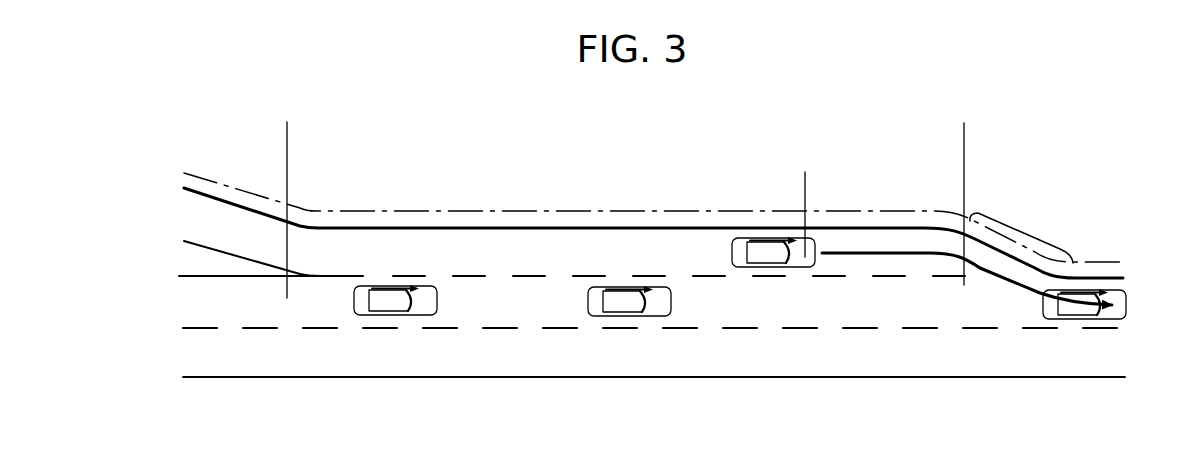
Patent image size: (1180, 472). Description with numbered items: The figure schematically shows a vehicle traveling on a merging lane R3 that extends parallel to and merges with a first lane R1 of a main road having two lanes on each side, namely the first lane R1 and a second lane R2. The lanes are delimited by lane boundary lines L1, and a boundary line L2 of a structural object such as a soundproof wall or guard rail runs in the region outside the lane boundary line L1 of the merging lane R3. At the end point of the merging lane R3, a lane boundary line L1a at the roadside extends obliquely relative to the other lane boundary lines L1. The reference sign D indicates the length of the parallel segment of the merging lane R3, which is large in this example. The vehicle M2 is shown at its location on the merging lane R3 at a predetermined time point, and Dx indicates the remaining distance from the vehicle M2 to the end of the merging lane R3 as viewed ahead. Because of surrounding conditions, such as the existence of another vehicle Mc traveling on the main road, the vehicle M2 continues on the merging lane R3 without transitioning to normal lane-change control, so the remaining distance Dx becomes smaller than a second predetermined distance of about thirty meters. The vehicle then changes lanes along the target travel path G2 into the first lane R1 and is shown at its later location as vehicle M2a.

The lane boundary line L1 is at (327, 277).
The boundary line of a structural object L2 is at (632, 210).
The lane boundary line at the end point of the merging lane L1a is at (1023, 228).
The another vehicle Mc is at (390, 300).
The vehicle M2 is at (763, 247).
The vehicle M2a is at (1070, 310).
The target travel path G2 is at (998, 278).
The first lane R1 is at (526, 307).
The second lane R2 is at (541, 354).
The merging lane R3 is at (504, 265).
The length of the parallel segment of the merging lane D is at (289, 133).
The remaining distance Dx is at (807, 183).